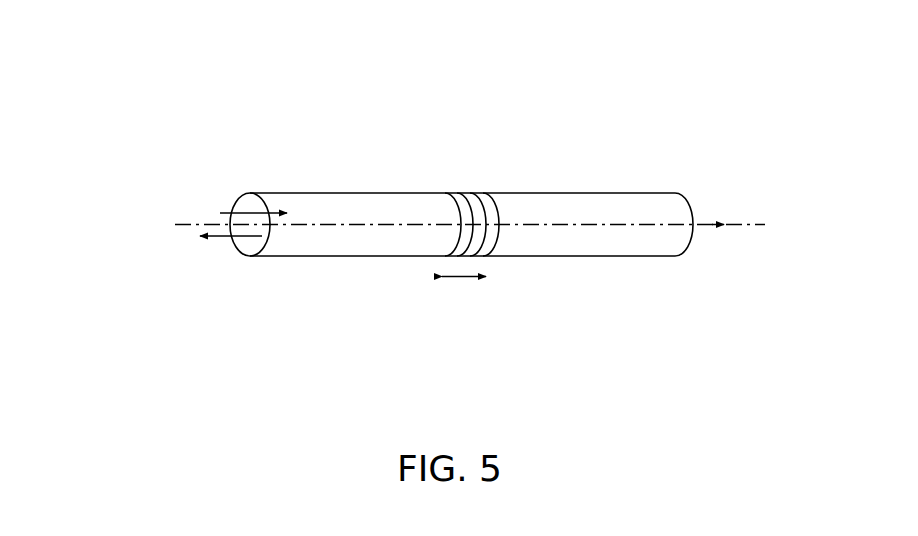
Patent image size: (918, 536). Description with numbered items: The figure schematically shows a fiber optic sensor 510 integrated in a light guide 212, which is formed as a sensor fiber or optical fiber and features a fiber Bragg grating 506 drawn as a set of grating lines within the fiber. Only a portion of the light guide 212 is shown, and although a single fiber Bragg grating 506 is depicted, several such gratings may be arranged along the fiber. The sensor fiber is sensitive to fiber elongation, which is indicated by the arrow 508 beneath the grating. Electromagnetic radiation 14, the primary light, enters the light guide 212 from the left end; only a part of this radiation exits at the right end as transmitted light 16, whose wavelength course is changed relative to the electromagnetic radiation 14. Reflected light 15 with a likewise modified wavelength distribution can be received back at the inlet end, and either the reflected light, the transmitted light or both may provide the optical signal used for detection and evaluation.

The fiber optic sensor 510 is at (128, 66).
The light guide 212 is at (584, 214).
The fiber Bragg grating 506 is at (458, 174).
The arrow indicating fiber elongation 508 is at (463, 280).
The electromagnetic radiation 14 is at (216, 212).
The reflected light 15 is at (219, 239).
The transmitted light 16 is at (705, 223).